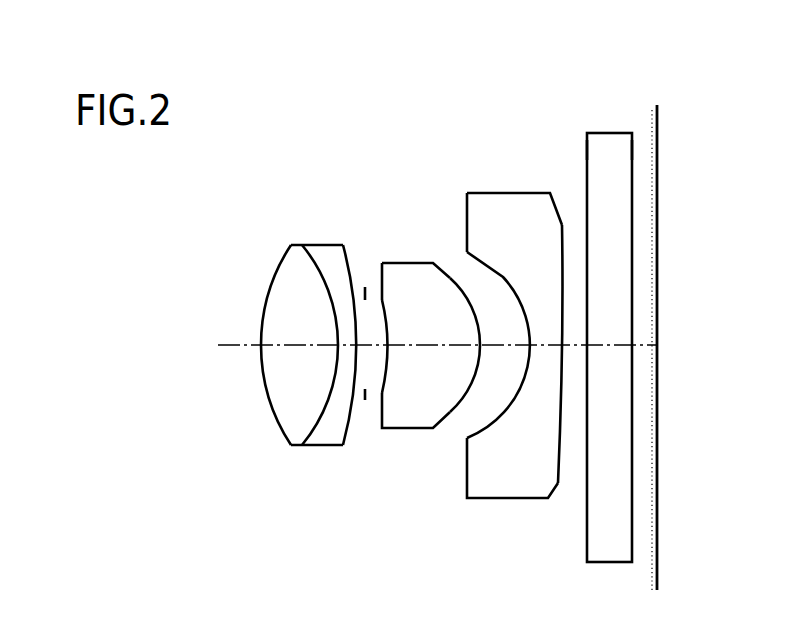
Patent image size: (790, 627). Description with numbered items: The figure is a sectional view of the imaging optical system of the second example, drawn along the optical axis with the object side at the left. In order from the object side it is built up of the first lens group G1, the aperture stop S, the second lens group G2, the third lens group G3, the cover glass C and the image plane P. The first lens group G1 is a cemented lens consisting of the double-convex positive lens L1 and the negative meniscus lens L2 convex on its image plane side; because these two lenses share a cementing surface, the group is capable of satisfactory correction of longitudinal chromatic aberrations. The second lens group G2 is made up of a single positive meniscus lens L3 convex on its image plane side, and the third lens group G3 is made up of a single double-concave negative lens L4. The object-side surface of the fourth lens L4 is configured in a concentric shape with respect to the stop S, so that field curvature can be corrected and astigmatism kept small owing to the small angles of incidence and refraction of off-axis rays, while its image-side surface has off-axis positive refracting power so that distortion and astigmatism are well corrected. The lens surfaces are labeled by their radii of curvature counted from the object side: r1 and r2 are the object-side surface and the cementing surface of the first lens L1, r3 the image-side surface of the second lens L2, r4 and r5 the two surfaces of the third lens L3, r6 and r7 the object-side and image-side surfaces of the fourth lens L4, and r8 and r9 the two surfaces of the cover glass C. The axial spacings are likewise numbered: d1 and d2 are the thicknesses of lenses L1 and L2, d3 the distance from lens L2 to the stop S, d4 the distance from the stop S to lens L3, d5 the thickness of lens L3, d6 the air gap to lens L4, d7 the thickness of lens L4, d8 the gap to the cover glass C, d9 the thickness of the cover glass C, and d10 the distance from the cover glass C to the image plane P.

The first lens group G1 is at (358, 117).
The second lens group G2 is at (457, 117).
The third lens group G3 is at (562, 117).
The first lens L1 is at (293, 246).
The second lens L2 is at (331, 258).
The third lens L3 is at (411, 290).
The fourth lens L4 is at (517, 212).
The aperture stop S is at (366, 291).
The cover glass C is at (610, 155).
The image plane P is at (658, 200).
The radius of curvature r1 is at (271, 283).
The radius of curvature r2 is at (320, 268).
The radius of curvature r3 is at (349, 270).
The radius of curvature r4 is at (392, 290).
The radius of curvature r5 is at (448, 277).
The radius of curvature r6 is at (481, 257).
The radius of curvature r7 is at (562, 225).
The radius of curvature r8 is at (585, 158).
The radius of curvature r9 is at (633, 157).
The lens surface-to-lens surface spacing d1 is at (296, 360).
The lens surface-to-lens surface spacing d2 is at (345, 348).
The lens surface-to-lens surface spacing d3 is at (356, 350).
The lens surface-to-lens surface spacing d4 is at (373, 348).
The lens surface-to-lens surface spacing d5 is at (432, 360).
The lens surface-to-lens surface spacing d6 is at (499, 360).
The lens surface-to-lens surface spacing d7 is at (546, 360).
The lens surface-to-lens surface spacing d8 is at (575, 348).
The lens surface-to-lens surface spacing d9 is at (607, 360).
The lens surface-to-lens surface spacing d10 is at (643, 348).